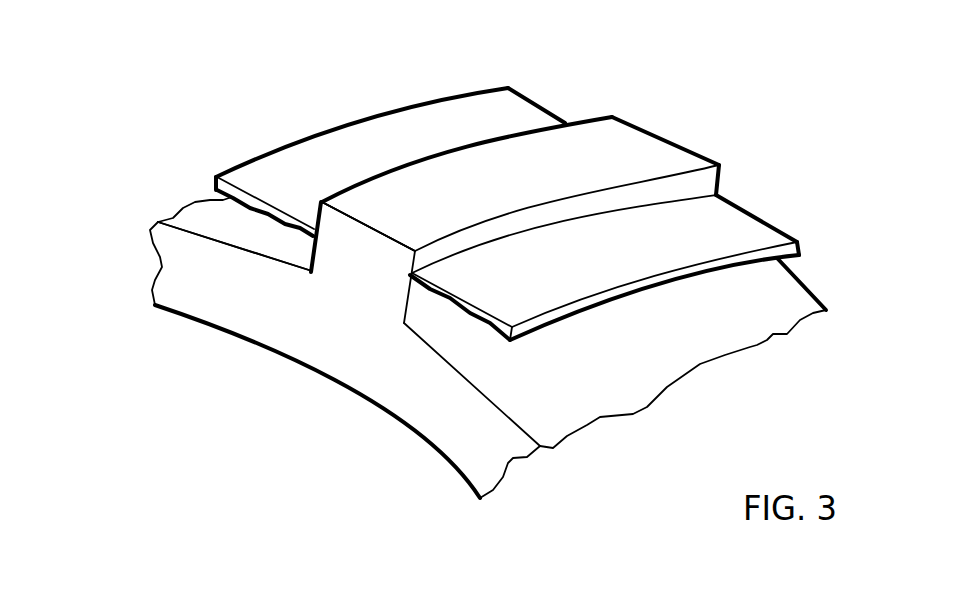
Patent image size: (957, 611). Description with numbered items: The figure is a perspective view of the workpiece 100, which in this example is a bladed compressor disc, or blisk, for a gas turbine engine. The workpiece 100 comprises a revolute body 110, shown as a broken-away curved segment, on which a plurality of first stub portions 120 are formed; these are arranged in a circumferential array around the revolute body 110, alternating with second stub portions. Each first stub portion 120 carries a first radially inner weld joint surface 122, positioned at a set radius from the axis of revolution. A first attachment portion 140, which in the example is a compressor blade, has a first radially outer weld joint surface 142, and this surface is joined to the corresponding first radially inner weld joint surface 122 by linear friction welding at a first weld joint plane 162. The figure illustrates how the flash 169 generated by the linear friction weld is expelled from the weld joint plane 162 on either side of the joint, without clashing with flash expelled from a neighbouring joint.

The workpiece 100 is at (127, 153).
The revolute body 110 is at (562, 423).
The first stub portion 120 is at (340, 264).
The first radially inner weld joint surface 122 is at (386, 262).
The first attachment portion 140 is at (720, 178).
The first radially outer weld joint surface 142 is at (352, 256).
The first weld joint plane 162 is at (647, 148).
The flash 169 is at (379, 132).